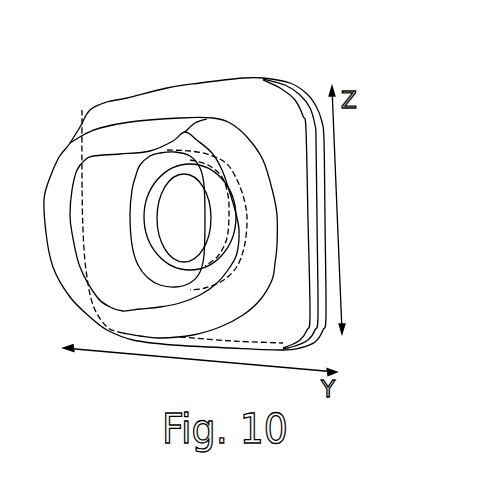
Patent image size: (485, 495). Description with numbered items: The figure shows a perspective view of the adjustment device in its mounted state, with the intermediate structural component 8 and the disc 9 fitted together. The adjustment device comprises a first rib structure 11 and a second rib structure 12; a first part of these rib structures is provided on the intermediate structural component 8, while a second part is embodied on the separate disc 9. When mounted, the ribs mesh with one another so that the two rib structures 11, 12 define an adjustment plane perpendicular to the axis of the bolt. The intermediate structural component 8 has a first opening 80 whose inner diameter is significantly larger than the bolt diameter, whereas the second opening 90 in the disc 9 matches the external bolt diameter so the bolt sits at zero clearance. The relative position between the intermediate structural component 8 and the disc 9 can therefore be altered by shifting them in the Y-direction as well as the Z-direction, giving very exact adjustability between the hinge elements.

The intermediate structural component 8 is at (113, 140).
The disc 9 is at (318, 130).
The first rib structure 11 is at (172, 84).
The second rib structure 12 is at (323, 207).
The first opening 80 is at (112, 283).
The second opening 90 is at (162, 250).